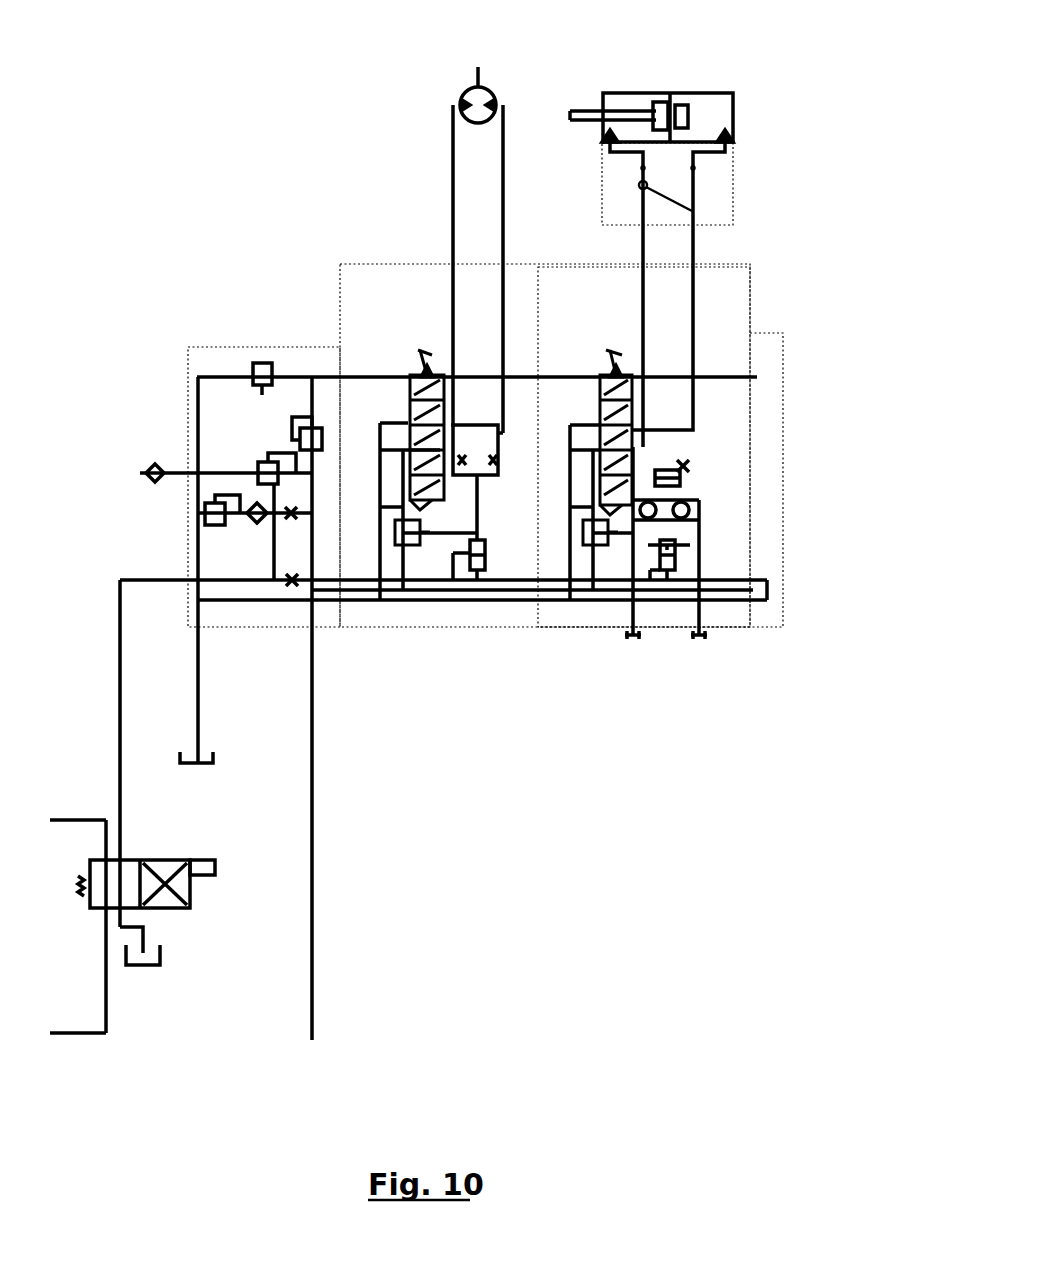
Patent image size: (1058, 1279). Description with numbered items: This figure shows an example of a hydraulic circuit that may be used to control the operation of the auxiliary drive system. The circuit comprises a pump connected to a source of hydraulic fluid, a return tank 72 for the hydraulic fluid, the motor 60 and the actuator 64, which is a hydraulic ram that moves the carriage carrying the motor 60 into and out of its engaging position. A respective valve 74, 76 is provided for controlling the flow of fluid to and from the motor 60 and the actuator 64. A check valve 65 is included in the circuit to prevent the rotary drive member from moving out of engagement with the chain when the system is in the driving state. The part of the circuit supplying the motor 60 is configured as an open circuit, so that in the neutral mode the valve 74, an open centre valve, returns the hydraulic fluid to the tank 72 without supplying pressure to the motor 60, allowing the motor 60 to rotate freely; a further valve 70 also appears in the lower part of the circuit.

The motor 60 is at (472, 123).
The actuator 64 is at (705, 92).
The check valve 65 is at (638, 186).
The directional control valve 70 is at (176, 912).
The return tank 72 is at (203, 764).
The valve 74 is at (410, 435).
The valve 76 is at (628, 410).